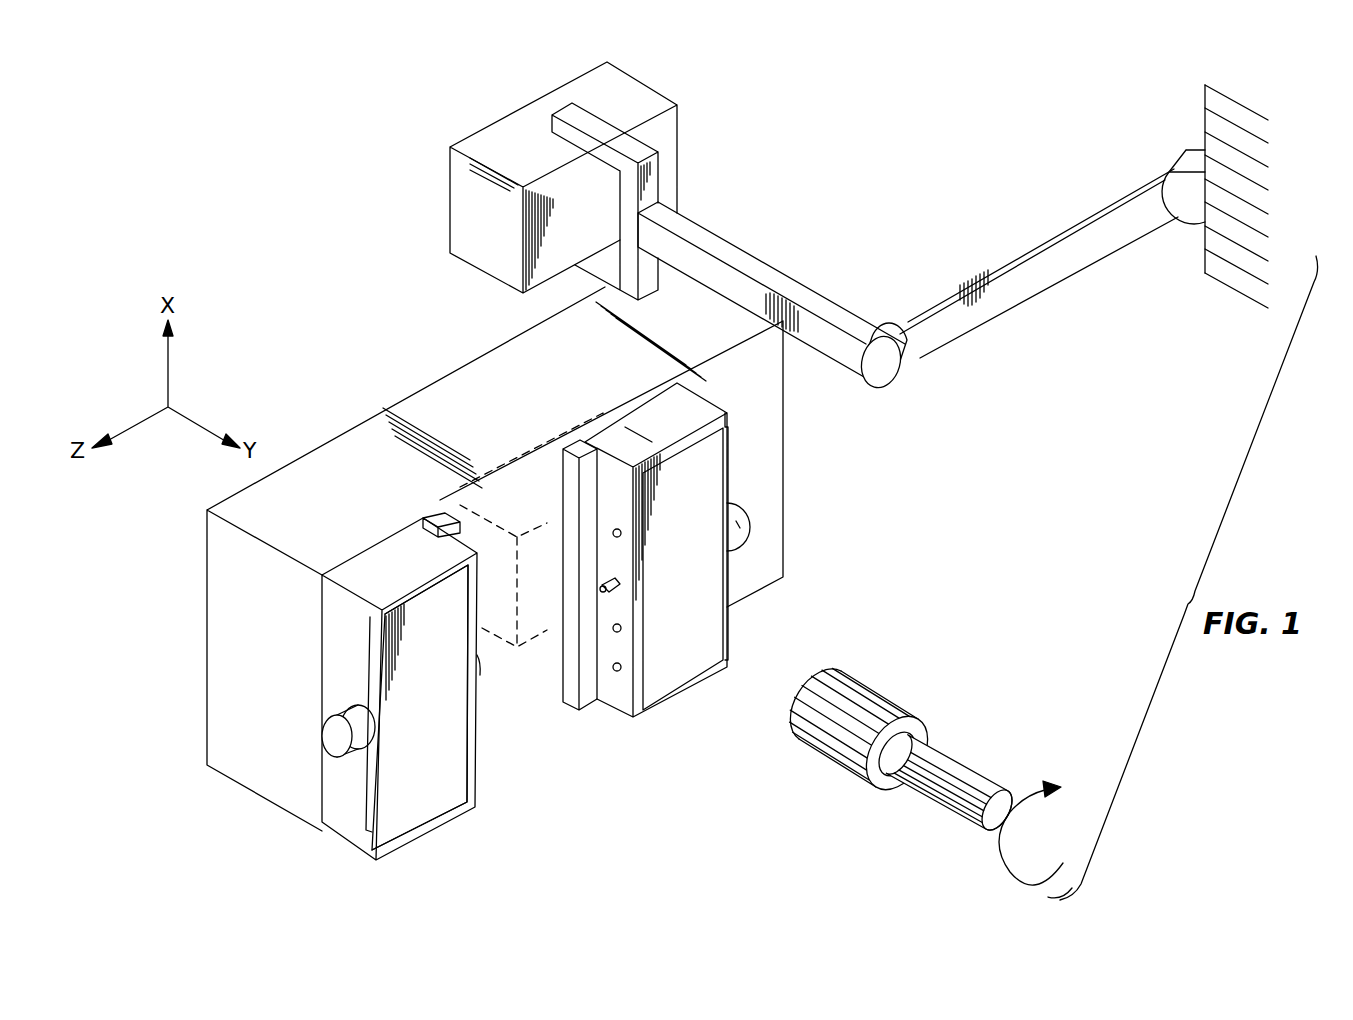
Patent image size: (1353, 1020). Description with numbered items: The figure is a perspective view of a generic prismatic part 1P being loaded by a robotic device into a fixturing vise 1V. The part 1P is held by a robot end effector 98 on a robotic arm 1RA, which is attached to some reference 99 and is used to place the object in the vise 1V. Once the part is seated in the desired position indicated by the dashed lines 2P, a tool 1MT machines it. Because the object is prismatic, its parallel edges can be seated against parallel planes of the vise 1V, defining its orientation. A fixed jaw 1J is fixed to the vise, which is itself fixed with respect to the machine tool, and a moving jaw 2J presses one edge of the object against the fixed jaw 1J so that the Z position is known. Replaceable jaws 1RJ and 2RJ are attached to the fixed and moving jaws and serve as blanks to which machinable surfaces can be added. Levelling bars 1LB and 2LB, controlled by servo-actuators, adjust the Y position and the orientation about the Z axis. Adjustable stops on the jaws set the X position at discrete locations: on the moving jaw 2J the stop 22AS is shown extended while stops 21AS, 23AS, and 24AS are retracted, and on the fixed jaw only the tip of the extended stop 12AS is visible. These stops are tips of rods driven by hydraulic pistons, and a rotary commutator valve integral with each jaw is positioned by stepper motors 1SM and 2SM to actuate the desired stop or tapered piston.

The prismatic part 1P is at (450, 178).
The robot end effector 98 is at (643, 160).
The reference 99 is at (1185, 145).
The robotic arm 1RA is at (992, 262).
The vise 1V is at (807, 408).
The fixed jaw 1J is at (347, 810).
The replaceable jaw 1RJ is at (408, 842).
The stepper motor 1SM is at (337, 735).
The levelling bar 1LB is at (430, 517).
The adjustable stop 12AS is at (477, 660).
The desired position 2P is at (517, 647).
The moving jaw 2J is at (733, 450).
The replaceable jaw 2RJ is at (660, 700).
The levelling bar 2LB is at (577, 447).
The stepper motor 2SM is at (741, 528).
The adjustable stop 21AS is at (622, 531).
The adjustable stop 22AS is at (620, 586).
The adjustable stop 23AS is at (622, 628).
The adjustable stop 24AS is at (622, 667).
The tool 1MT is at (873, 693).